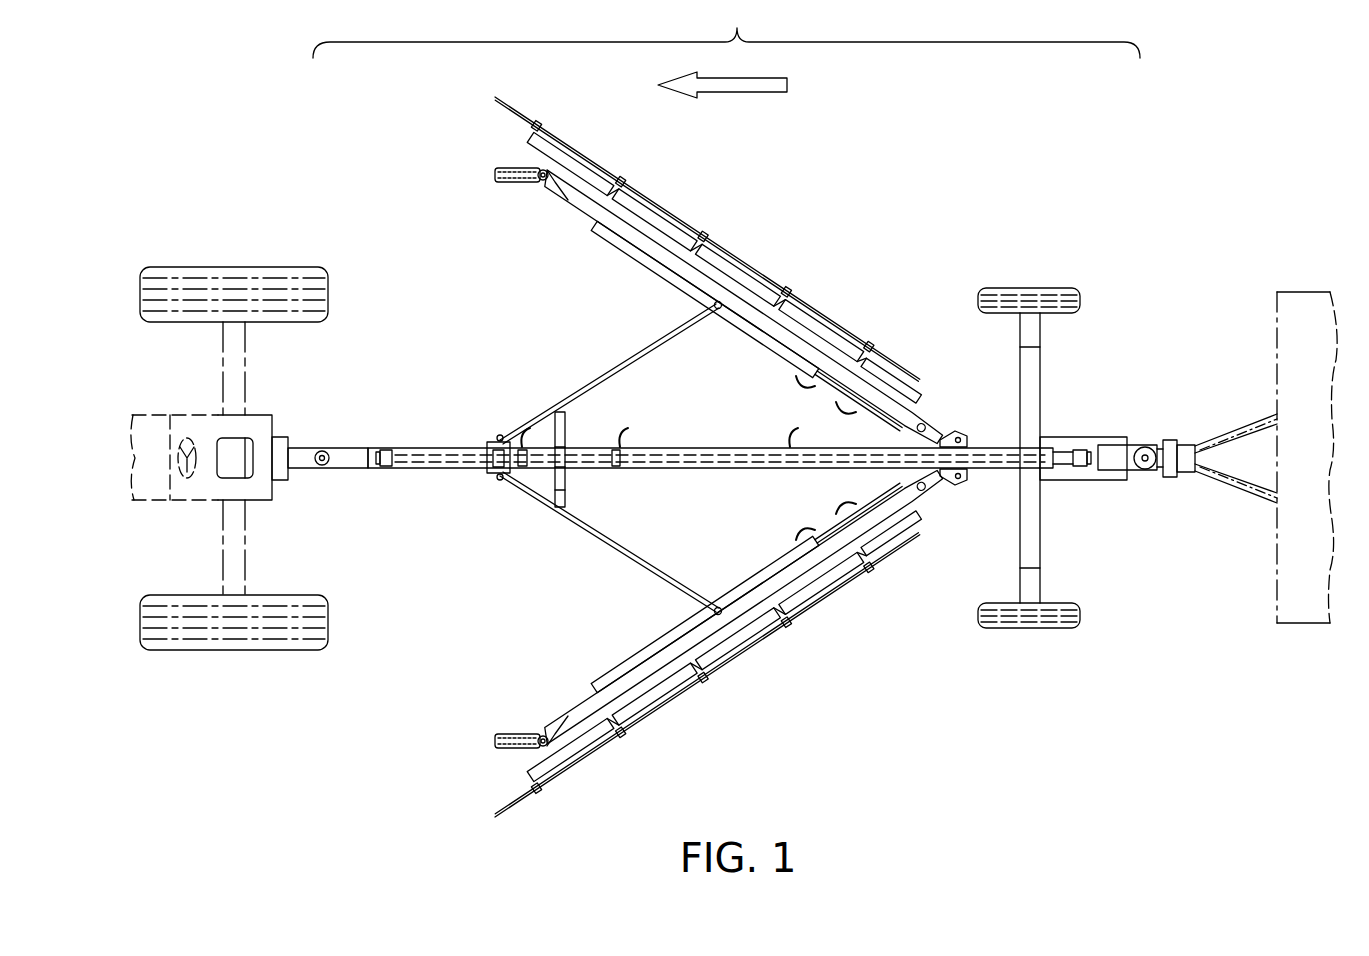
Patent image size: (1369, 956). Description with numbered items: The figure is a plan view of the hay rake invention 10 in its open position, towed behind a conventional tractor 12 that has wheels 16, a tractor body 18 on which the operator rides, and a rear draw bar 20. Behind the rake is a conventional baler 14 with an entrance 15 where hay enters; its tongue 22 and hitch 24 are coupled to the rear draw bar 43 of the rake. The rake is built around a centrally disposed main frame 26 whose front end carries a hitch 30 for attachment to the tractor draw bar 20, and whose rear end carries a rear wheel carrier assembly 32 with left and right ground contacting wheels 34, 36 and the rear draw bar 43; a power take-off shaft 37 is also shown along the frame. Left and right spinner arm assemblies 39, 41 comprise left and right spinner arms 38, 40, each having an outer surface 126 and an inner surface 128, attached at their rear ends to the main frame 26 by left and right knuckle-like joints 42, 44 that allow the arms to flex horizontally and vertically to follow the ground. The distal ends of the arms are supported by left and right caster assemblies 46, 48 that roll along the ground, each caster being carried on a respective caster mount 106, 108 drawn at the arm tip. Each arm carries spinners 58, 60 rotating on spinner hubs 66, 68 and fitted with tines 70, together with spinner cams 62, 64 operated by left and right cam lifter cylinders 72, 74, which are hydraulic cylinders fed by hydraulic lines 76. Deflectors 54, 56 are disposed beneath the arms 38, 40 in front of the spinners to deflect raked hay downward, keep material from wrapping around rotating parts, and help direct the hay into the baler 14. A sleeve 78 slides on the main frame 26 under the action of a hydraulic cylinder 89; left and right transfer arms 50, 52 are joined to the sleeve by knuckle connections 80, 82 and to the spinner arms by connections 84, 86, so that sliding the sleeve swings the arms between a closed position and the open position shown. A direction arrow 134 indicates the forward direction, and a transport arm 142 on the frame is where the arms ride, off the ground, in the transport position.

The present invention 10 is at (739, 34).
The tractor 12 is at (265, 423).
The baler 14 is at (1307, 457).
The entrance 15 is at (1258, 462).
The wheels 16 is at (328, 292).
The tractor body 18 is at (178, 415).
The draw bar 20 is at (328, 450).
The tongue 22 is at (1236, 455).
The hitch 24 is at (1170, 440).
The main frame 26 is at (720, 470).
The hitch 30 is at (322, 468).
The rear wheel carrier assembly 32 is at (1062, 458).
The left ground contacting wheel 34 is at (1078, 612).
The right ground contacting wheel 36 is at (1078, 295).
The power take-off shaft 37 is at (386, 468).
The left spinner arm 38 is at (693, 668).
The left spinner arm assembly 39 is at (705, 664).
The right spinner arm 40 is at (735, 273).
The right spinner arm assembly 41 is at (706, 255).
The left spinner arm knuckle-like joint 42 is at (957, 486).
The rear draw bar 43 is at (1138, 484).
The right spinner arm knuckle-like joint 44 is at (960, 432).
The left caster assembly 46 is at (500, 728).
The right caster assembly 48 is at (500, 188).
The left transfer arm 50 is at (611, 552).
The right transfer arm 52 is at (611, 364).
The left deflector 54 is at (747, 586).
The right deflector 56 is at (747, 327).
The left spinner 58 is at (707, 675).
The right spinner 60 is at (707, 239).
The left spinner cam 62 is at (570, 749).
The right spinner cam 64 is at (570, 163).
The left spinner hub 66 is at (702, 677).
The right spinner hub 68 is at (702, 236).
The tines 70 is at (495, 97).
The left cam lifter cylinder 72 is at (848, 564).
The right cam lifter cylinder 74 is at (848, 349).
The hydraulic lines 76 is at (523, 428).
The sleeve 78 is at (477, 476).
The left transfer arm knuckle connection 80 is at (500, 480).
The right transfer arm knuckle connection 82 is at (498, 436).
The left connection 84 is at (712, 610).
The right connection 86 is at (712, 305).
The hydraulic cylinder 89 is at (578, 470).
The lower wheel arm 106 is at (540, 733).
The upper wheel arm 108 is at (540, 183).
The outer surface 126 is at (652, 218).
The inner surface 128 is at (741, 308).
The direction arrow 134 is at (740, 95).
The transport arm 142 is at (565, 425).